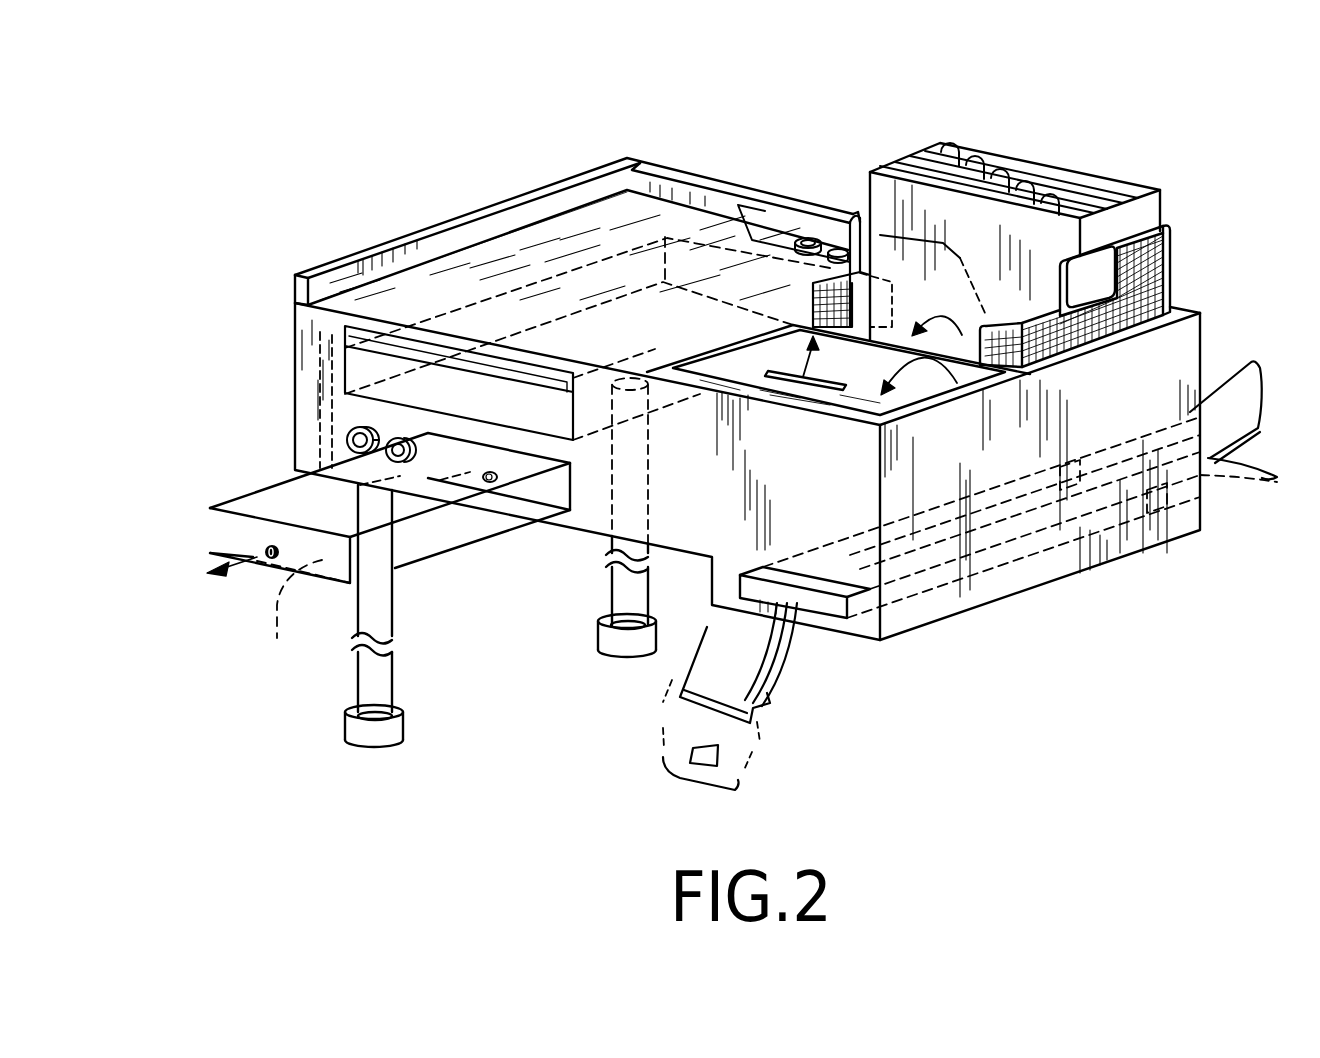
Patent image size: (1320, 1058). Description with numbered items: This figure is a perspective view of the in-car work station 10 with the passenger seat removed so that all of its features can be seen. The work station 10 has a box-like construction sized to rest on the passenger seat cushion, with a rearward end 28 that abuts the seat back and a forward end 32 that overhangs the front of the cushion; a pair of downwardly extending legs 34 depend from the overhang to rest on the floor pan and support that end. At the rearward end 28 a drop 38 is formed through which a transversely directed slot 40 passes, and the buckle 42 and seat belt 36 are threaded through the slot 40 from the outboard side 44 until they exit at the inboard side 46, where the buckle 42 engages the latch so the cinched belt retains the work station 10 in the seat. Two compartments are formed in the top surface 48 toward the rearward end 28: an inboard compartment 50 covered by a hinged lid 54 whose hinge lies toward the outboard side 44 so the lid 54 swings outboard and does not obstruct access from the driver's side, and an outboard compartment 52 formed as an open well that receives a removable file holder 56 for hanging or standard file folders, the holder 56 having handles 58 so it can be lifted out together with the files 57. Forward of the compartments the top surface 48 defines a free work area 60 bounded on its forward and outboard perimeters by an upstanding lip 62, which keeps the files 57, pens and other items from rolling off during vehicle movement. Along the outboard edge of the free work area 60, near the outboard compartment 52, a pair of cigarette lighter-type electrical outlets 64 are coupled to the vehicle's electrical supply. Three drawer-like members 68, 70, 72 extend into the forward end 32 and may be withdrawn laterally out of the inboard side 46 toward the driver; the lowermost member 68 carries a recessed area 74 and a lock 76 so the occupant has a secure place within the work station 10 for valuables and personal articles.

The in-car work station 10 is at (348, 151).
The rearward end 28 is at (1186, 345).
The forward end 32 is at (318, 329).
The legs 34 is at (385, 690).
The seat belt 36 is at (713, 665).
The drop 38 is at (712, 583).
The slot 40 is at (824, 607).
The buckle 42 is at (740, 742).
The outboard side 44 is at (1170, 392).
The inboard side 46 is at (697, 470).
The top surface 48 is at (548, 243).
The inboard compartment 50 is at (957, 383).
The outboard compartment 52 is at (962, 335).
The hinged lid 54 is at (782, 307).
The file holder 56 is at (1170, 264).
The files 57 is at (955, 148).
The handles 58 is at (846, 225).
The free work area 60 is at (662, 338).
The lip 62 is at (450, 243).
The electrical outlets 64 is at (345, 440).
The drawer-like member 68 is at (277, 640).
The drawer-like member 70 is at (418, 383).
The drawer-like member 72 is at (347, 338).
The recessed area 74 is at (267, 487).
The lock 76 is at (482, 480).